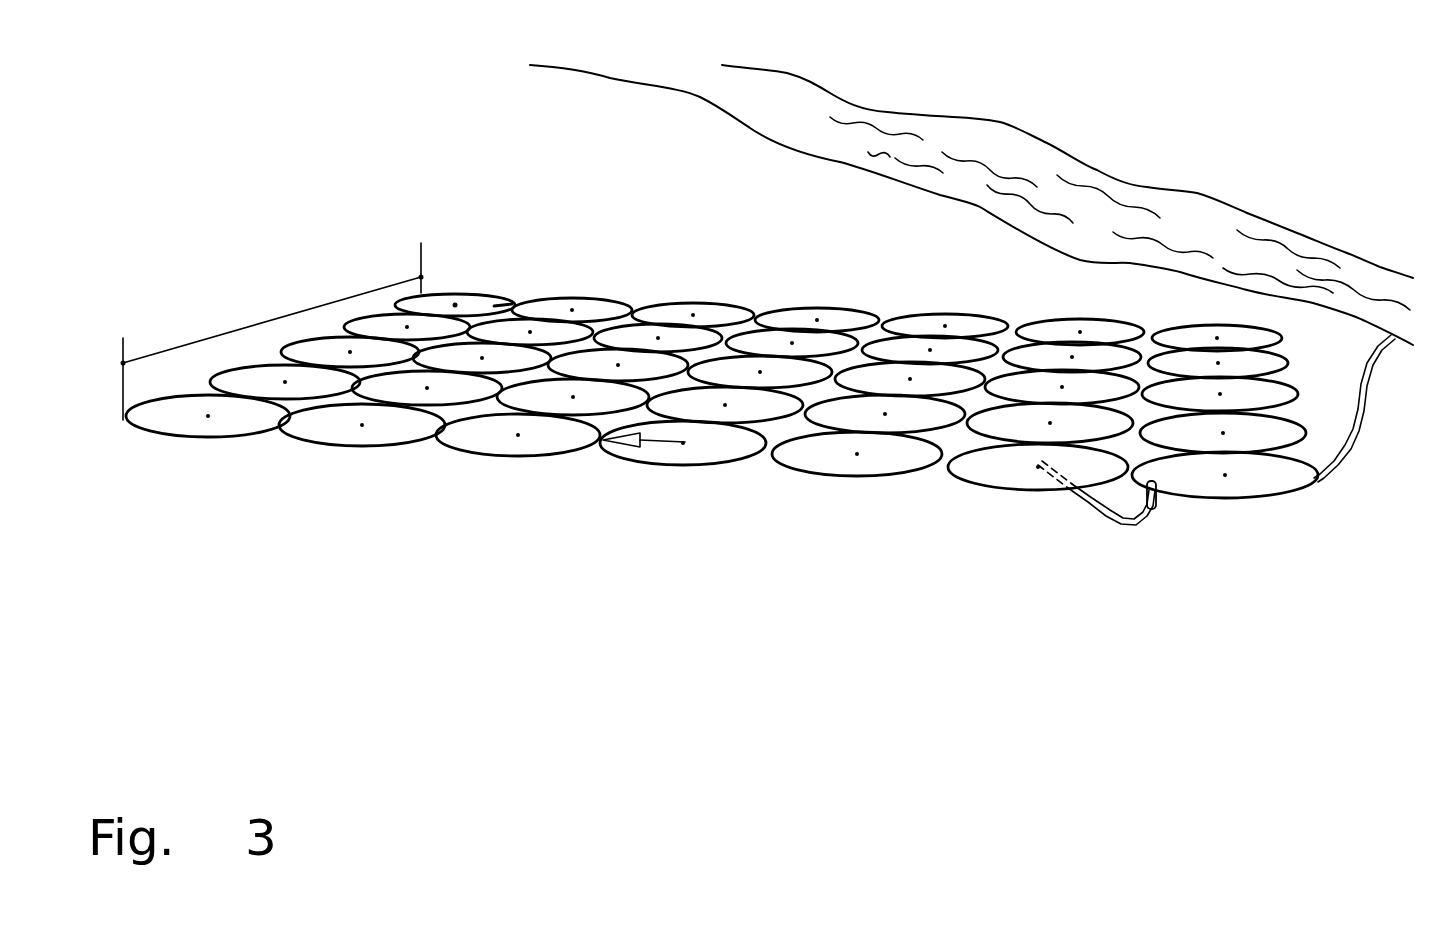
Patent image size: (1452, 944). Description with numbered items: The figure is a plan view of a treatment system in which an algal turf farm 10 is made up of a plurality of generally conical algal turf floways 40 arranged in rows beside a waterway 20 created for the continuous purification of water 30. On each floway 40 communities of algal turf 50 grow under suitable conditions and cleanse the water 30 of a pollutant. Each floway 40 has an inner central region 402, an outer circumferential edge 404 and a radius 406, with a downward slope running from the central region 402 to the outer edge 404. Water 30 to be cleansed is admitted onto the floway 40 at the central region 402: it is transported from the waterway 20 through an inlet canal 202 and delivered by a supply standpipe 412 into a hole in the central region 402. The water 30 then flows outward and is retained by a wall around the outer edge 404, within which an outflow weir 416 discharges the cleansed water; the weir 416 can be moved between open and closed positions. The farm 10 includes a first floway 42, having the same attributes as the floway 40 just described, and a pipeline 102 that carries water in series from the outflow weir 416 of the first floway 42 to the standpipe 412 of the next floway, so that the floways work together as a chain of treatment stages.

The algal turf farm 10 is at (230, 305).
The waterway 20 is at (1107, 172).
The water 30 is at (1203, 238).
The algal turf floway 40 is at (348, 433).
The first floway 42 is at (1247, 488).
The algal turf 50 is at (485, 302).
The pipeline 102 is at (1103, 513).
The inlet canal 202 is at (1370, 372).
The inner central region 402 is at (457, 304).
The outer circumferential edge 404 is at (503, 306).
The radius 406 is at (663, 442).
The supply standpipe 412 is at (1038, 463).
The outflow weir 416 is at (1153, 512).